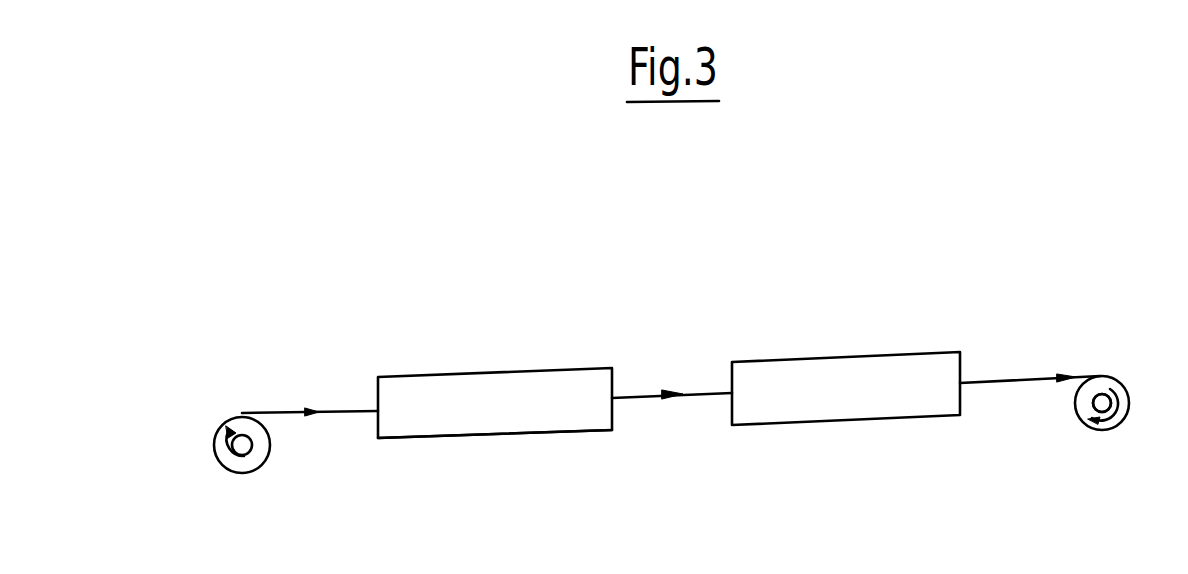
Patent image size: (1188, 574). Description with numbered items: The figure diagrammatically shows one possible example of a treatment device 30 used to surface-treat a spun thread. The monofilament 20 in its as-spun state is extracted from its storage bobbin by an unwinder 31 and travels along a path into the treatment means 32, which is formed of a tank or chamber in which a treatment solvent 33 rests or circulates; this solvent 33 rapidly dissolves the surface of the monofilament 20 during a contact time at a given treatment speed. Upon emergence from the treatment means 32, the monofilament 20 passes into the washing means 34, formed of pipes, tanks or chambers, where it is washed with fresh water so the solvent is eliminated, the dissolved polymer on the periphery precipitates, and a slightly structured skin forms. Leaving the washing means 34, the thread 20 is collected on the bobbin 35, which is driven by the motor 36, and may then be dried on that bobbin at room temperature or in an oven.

The monofilament 20 is at (310, 415).
The treatment device 30 is at (626, 269).
The unwinder 31 is at (230, 473).
The treatment means 32 is at (390, 377).
The treatment solvent 33 is at (498, 435).
The washing means 34 is at (835, 358).
The bobbin 35 is at (1100, 431).
The motor 36 is at (1112, 393).